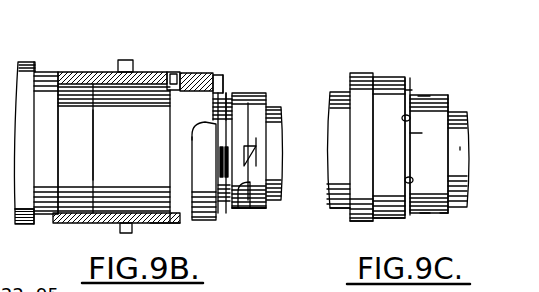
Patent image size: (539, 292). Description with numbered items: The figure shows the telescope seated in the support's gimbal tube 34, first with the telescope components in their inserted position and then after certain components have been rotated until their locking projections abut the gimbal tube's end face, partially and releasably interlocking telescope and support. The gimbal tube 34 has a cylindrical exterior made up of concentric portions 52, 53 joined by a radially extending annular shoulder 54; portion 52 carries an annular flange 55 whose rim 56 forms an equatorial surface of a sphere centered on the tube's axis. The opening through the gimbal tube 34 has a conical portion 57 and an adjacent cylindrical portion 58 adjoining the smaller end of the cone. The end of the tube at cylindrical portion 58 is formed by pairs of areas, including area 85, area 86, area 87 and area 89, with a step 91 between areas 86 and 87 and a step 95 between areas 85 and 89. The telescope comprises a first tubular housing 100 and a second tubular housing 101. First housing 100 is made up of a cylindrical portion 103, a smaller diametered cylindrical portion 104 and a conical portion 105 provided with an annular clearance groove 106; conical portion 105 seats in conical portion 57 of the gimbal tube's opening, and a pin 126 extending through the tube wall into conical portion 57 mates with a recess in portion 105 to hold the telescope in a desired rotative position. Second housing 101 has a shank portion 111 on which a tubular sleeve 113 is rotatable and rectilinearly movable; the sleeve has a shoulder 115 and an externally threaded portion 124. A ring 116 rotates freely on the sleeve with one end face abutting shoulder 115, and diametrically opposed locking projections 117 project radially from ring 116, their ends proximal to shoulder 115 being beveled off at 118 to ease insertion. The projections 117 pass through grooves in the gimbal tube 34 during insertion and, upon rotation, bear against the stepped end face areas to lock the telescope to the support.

In FIG. 9B, the gimbal tube 34 is at (156, 69).
In FIG. 9C, the gimbal tube 34 is at (352, 72).
In FIG. 9B, the concentric portion of the gimbal tube's exterior surface 52 is at (95, 80).
In FIG. 9C, the concentric portion of the gimbal tube's exterior surface 52 is at (358, 219).
In FIG. 9B, the concentric portion of the gimbal tube's exterior surface 53 is at (223, 88).
In FIG. 9C, the concentric portion of the gimbal tube's exterior surface 53 is at (388, 215).
In FIG. 9B, the annular shoulder 54 is at (219, 75).
In FIG. 9C, the annular shoulder 54 is at (378, 77).
In FIG. 9B, the annular flange 55 is at (113, 234).
In FIG. 9B, the rim 56 is at (128, 60).
In FIG. 9B, the conical portion 57 is at (150, 92).
In FIG. 9B, the cylindrical portion 58 is at (243, 93).
In FIG. 9B, the area 85 is at (229, 97).
In FIG. 9C, the area 85 is at (415, 96).
In FIG. 9B, the area 86 is at (220, 212).
In FIG. 9C, the area 86 is at (405, 180).
In FIG. 9B, the area 87 is at (250, 125).
In FIG. 9C, the area 87 is at (402, 118).
In FIG. 9B, the area 89 is at (226, 92).
In FIG. 9B, the step 91 is at (192, 137).
In FIG. 9C, the step 91 is at (408, 159).
In FIG. 9C, the step 95 is at (410, 92).
In FIG. 9B, the first tubular housing 100 is at (21, 61).
In FIG. 9C, the first tubular housing 100 is at (331, 84).
In FIG. 9C, the second tubular housing 101 is at (487, 93).
In FIG. 9B, the cylindrical portion 103 is at (17, 226).
In FIG. 9B, the cylindrical portion 104 is at (50, 85).
In FIG. 9B, the conical portion 105 is at (192, 152).
In FIG. 9B, the annular clearance groove 106 is at (156, 222).
In FIG. 9C, the annular clearance groove 106 is at (343, 211).
In FIG. 9C, the shank portion 111 is at (460, 147).
In FIG. 9B, the tubular sleeve 113 is at (258, 214).
In FIG. 9C, the tubular sleeve 113 is at (452, 209).
In FIG. 9B, the shoulder 115 is at (258, 205).
In FIG. 9C, the shoulder 115 is at (420, 133).
In FIG. 9B, the ring 116 is at (242, 214).
In FIG. 9C, the ring 116 is at (436, 92).
In FIG. 9B, the locking projection 117 is at (255, 150).
In FIG. 9C, the locking projection 117 is at (425, 96).
In FIG. 9B, the bevel 118 is at (268, 138).
In FIG. 9C, the bevel 118 is at (426, 95).
In FIG. 9B, the externally threaded portion 124 is at (262, 110).
In FIG. 9B, the pin 126 is at (175, 73).